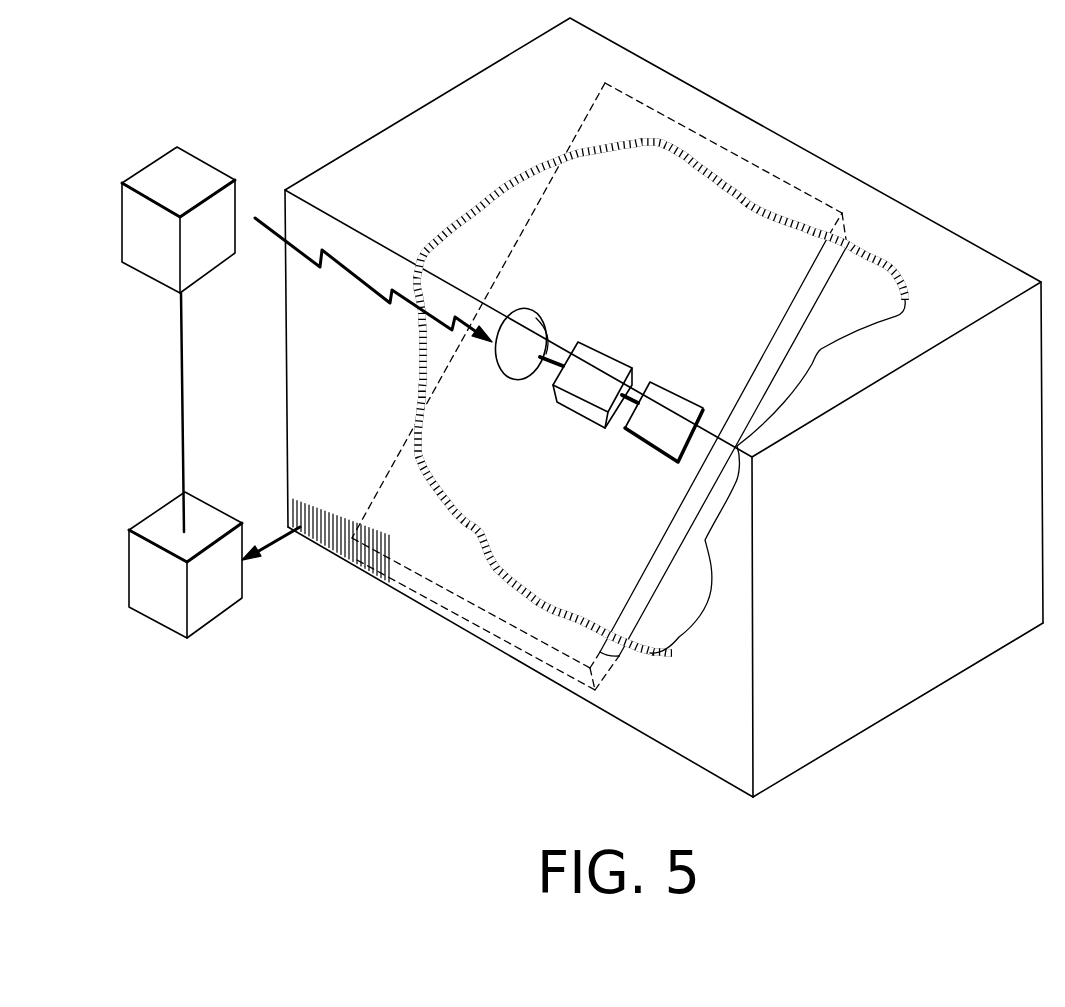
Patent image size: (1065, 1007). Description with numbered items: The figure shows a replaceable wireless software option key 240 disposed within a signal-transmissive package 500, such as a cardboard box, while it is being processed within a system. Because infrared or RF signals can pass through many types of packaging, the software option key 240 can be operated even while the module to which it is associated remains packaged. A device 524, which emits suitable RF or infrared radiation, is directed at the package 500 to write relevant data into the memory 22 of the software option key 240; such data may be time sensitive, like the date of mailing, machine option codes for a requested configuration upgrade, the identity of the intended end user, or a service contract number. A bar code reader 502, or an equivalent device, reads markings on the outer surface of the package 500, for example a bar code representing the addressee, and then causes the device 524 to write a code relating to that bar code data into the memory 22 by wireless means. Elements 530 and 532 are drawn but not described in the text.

The package 500 is at (970, 240).
The software option key 240 is at (722, 142).
The light receiver / detector 530 is at (528, 333).
The signal processor 532 is at (605, 363).
The memory 22 is at (680, 417).
The device 524 is at (197, 178).
The bar code reader 502 is at (212, 613).